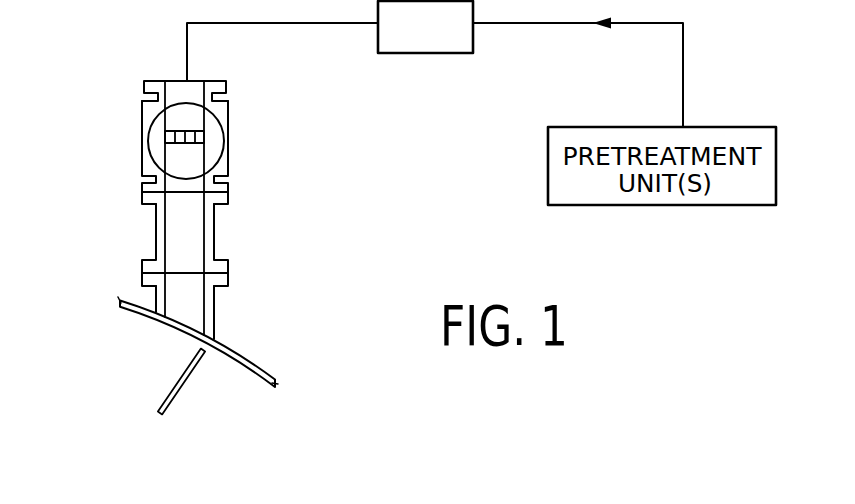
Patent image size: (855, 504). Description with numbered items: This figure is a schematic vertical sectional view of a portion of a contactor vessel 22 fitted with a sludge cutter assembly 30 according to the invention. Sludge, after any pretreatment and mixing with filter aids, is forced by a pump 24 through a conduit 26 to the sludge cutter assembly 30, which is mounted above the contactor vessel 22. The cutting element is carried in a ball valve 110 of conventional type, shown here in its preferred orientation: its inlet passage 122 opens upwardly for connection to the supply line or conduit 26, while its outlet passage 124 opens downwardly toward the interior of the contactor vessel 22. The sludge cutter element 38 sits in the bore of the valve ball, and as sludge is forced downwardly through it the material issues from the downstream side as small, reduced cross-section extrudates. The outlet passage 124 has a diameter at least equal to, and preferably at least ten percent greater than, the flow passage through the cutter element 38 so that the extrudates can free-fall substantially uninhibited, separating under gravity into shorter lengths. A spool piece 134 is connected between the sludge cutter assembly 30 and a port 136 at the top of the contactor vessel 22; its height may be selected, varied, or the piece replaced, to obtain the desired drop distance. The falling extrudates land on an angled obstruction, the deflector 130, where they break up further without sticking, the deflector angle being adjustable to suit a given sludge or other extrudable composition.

The contactor vessel 22 is at (266, 350).
The pump 24 is at (427, 53).
The conduit 26 is at (253, 24).
The sludge cutter assembly 30 is at (100, 155).
The sludge cutter element 38 is at (185, 143).
The ball valve 110 is at (143, 158).
The inlet passage 122 is at (166, 100).
The outlet passage 124 is at (206, 183).
The deflector 130 is at (185, 387).
The spool piece 134 is at (153, 233).
The port 136 is at (215, 313).